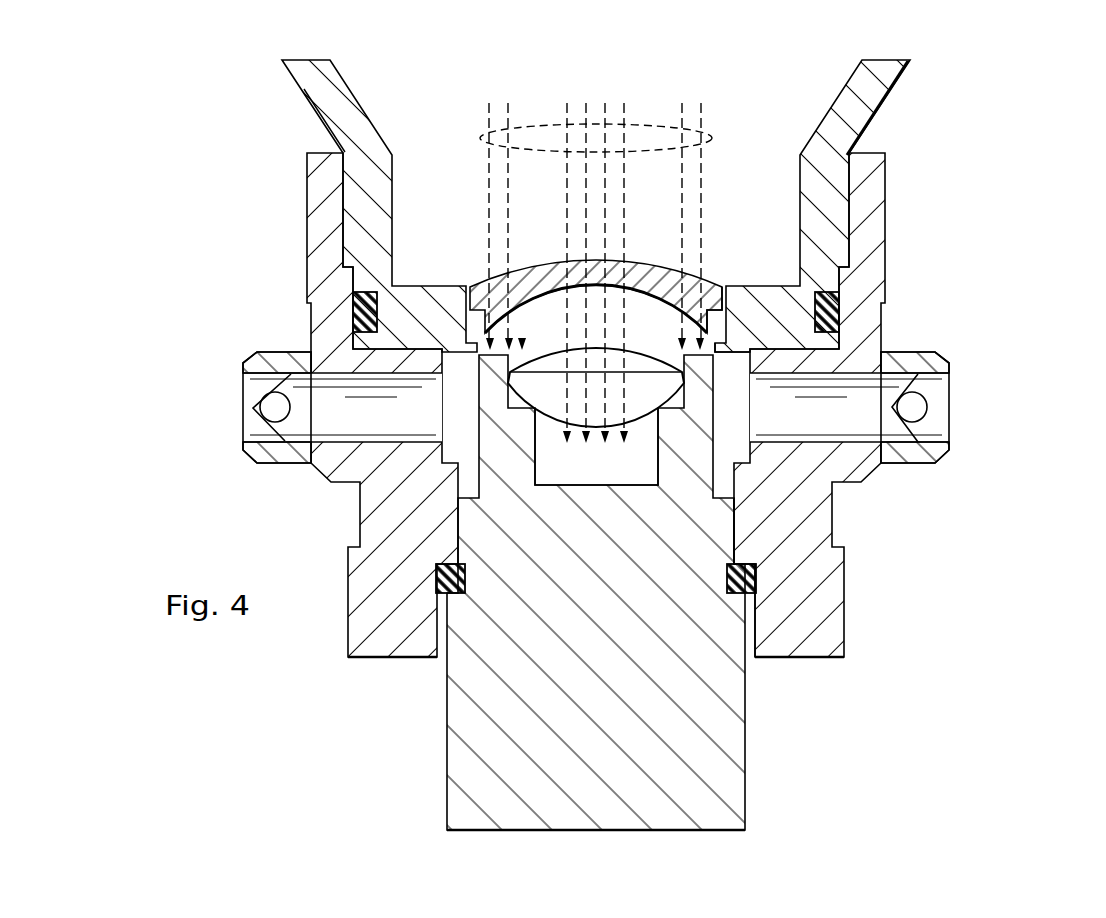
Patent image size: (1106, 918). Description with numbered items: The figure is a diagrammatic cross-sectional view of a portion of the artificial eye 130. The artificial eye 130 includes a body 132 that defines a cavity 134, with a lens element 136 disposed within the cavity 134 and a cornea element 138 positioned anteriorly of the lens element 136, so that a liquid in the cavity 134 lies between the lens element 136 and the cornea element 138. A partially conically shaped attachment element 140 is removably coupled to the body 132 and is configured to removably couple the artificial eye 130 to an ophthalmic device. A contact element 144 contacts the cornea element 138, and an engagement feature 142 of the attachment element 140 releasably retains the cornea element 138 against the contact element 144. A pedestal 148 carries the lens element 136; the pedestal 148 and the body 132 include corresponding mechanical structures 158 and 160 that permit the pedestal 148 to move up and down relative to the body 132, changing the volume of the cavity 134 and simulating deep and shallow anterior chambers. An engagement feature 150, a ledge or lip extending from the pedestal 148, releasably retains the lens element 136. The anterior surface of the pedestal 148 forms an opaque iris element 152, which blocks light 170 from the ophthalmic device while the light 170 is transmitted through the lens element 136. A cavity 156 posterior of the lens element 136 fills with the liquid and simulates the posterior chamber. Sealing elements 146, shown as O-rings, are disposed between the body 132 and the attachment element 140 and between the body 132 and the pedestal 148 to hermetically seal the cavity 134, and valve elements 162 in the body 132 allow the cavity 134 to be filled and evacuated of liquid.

The artificial eye 130 is at (1008, 167).
The body 132 is at (320, 345).
The cavity 134 is at (630, 300).
The lens element 136 is at (633, 410).
The cornea element 138 is at (540, 297).
The attachment element 140 is at (829, 118).
The engagement feature 142 is at (716, 352).
The contact element 144 is at (710, 288).
The sealing element 146 is at (365, 310).
The pedestal 148 is at (457, 752).
The engagement feature 150 is at (668, 357).
The iris element 152 is at (524, 349).
The cavity 156 is at (568, 478).
The mechanical structure 158 is at (734, 523).
The mechanical structure 160 is at (734, 540).
The valve element 162 is at (993, 427).
The light 170 is at (712, 140).